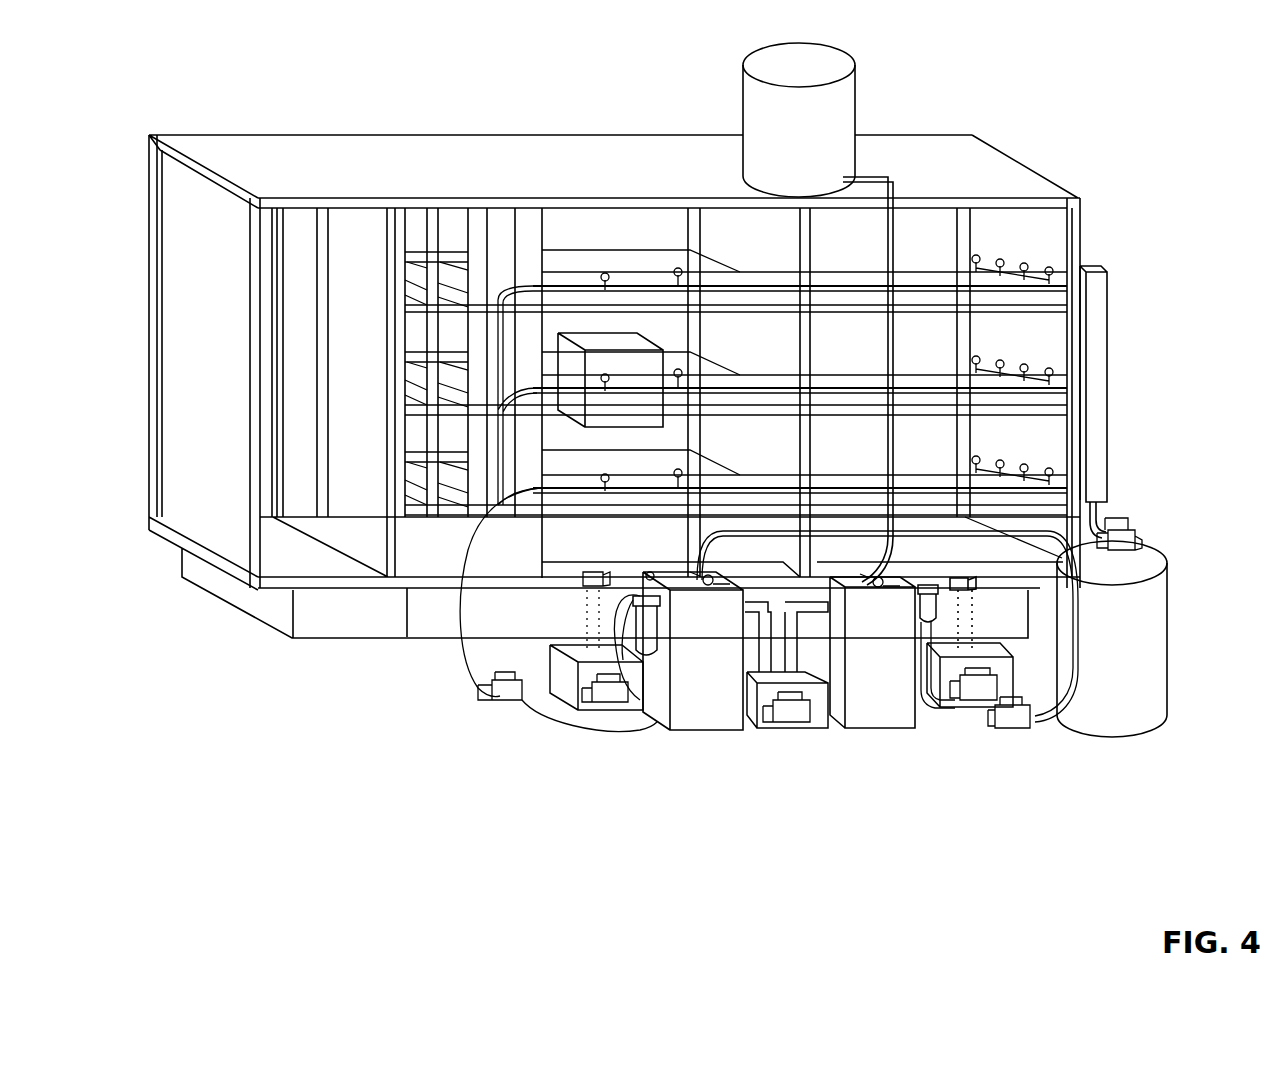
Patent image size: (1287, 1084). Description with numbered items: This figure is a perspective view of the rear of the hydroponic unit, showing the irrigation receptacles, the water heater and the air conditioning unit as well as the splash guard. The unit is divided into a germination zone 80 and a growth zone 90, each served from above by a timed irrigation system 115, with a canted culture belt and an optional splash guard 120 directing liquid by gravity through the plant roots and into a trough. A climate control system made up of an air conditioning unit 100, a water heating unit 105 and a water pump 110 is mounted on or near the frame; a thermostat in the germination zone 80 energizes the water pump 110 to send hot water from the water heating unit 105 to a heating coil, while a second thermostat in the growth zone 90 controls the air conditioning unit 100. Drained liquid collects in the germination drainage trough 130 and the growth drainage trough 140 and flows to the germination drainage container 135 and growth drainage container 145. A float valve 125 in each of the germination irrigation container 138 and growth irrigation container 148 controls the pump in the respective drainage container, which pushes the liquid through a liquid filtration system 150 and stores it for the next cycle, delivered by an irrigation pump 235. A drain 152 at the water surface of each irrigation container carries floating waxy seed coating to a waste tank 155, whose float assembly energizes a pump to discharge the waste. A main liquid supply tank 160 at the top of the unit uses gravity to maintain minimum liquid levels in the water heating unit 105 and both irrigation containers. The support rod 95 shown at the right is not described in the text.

The germination zone 80 is at (918, 233).
The growth zone 90 is at (608, 223).
The support rod 95 is at (1108, 340).
The air conditioning unit 100 is at (568, 370).
The water heating unit 105 is at (1122, 630).
The water pump 110 is at (1125, 523).
The irrigation system 115 is at (678, 263).
The splash guard 120 is at (457, 250).
The float valve 125 is at (655, 725).
The germination drainage trough 130 is at (958, 575).
The germination drainage container 135 is at (1008, 677).
The germination irrigation container 138 is at (845, 590).
The growth drainage trough 140 is at (577, 572).
The growth drainage container 145 is at (560, 692).
The growth irrigation container 148 is at (717, 640).
The liquid filtration system 150 is at (640, 660).
The drain 152 is at (710, 586).
The waste tank 155 is at (790, 725).
The main liquid supply tank 160 is at (840, 105).
The irrigation pump 235 is at (505, 692).